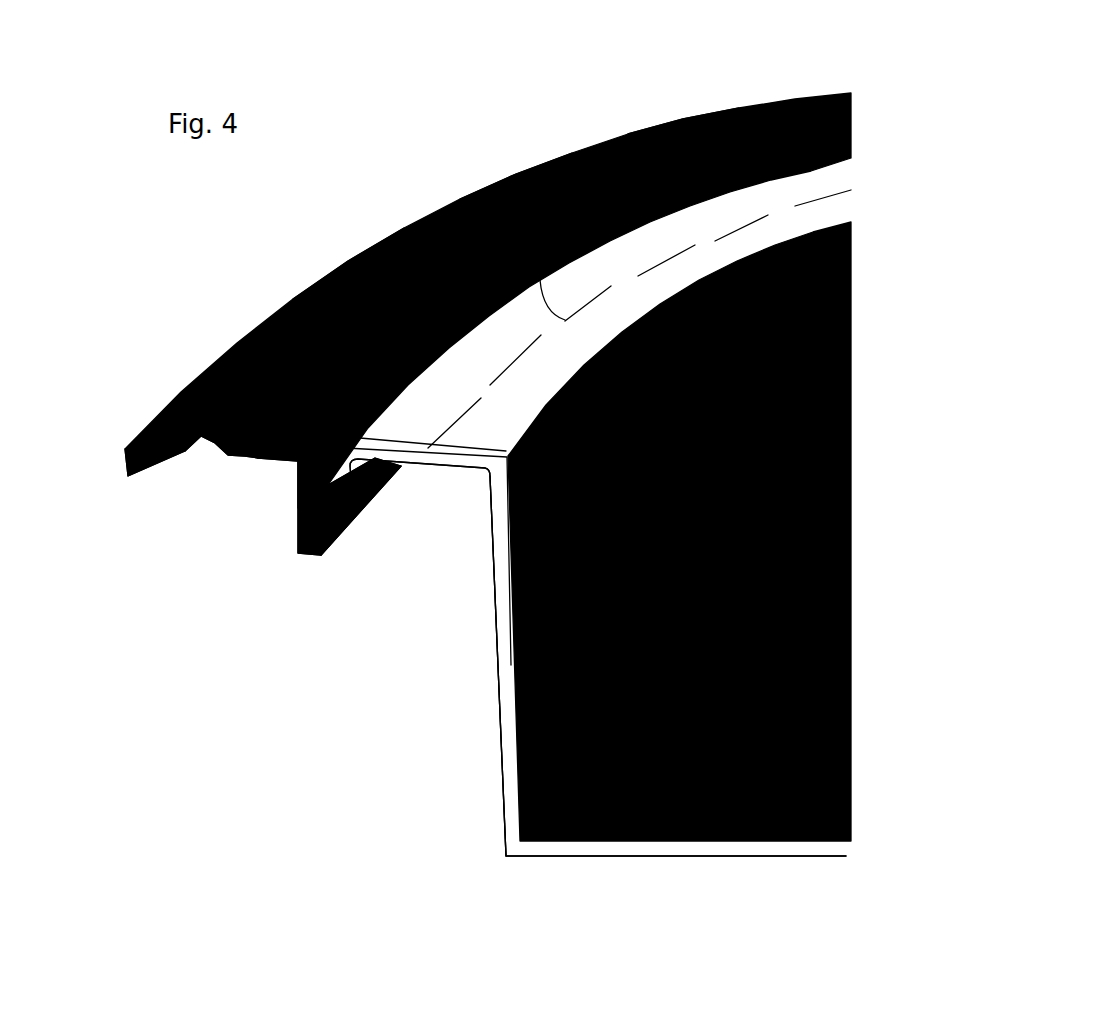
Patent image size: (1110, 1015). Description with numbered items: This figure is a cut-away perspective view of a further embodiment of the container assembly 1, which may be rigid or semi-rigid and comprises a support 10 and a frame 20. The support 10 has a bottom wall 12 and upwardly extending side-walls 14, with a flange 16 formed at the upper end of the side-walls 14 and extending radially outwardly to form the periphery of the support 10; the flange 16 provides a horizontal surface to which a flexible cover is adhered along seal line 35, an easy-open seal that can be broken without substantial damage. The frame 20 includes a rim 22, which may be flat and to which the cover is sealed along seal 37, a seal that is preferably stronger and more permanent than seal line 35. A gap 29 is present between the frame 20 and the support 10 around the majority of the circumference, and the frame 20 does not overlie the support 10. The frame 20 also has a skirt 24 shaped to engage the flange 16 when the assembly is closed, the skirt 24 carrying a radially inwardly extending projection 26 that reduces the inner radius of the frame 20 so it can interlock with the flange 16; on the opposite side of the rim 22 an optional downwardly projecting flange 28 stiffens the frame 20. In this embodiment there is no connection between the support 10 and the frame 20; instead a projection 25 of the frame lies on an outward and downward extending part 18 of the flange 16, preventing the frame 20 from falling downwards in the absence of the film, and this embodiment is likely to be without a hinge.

The container assembly 1 is at (180, 803).
The support 10 is at (515, 873).
The bottom wall 12 is at (663, 850).
The side-walls 14 is at (500, 656).
The flange 16 is at (432, 450).
The outward and downward extending part 18 is at (358, 486).
The frame 20 is at (160, 357).
The rim 22 is at (243, 448).
The skirt 24 is at (290, 482).
The projection 25 is at (293, 458).
The projection 26 is at (338, 523).
The downwardly projecting flange 28 is at (117, 457).
The gap 29 is at (663, 118).
The seal line 35 is at (515, 168).
The seal 37 is at (357, 240).